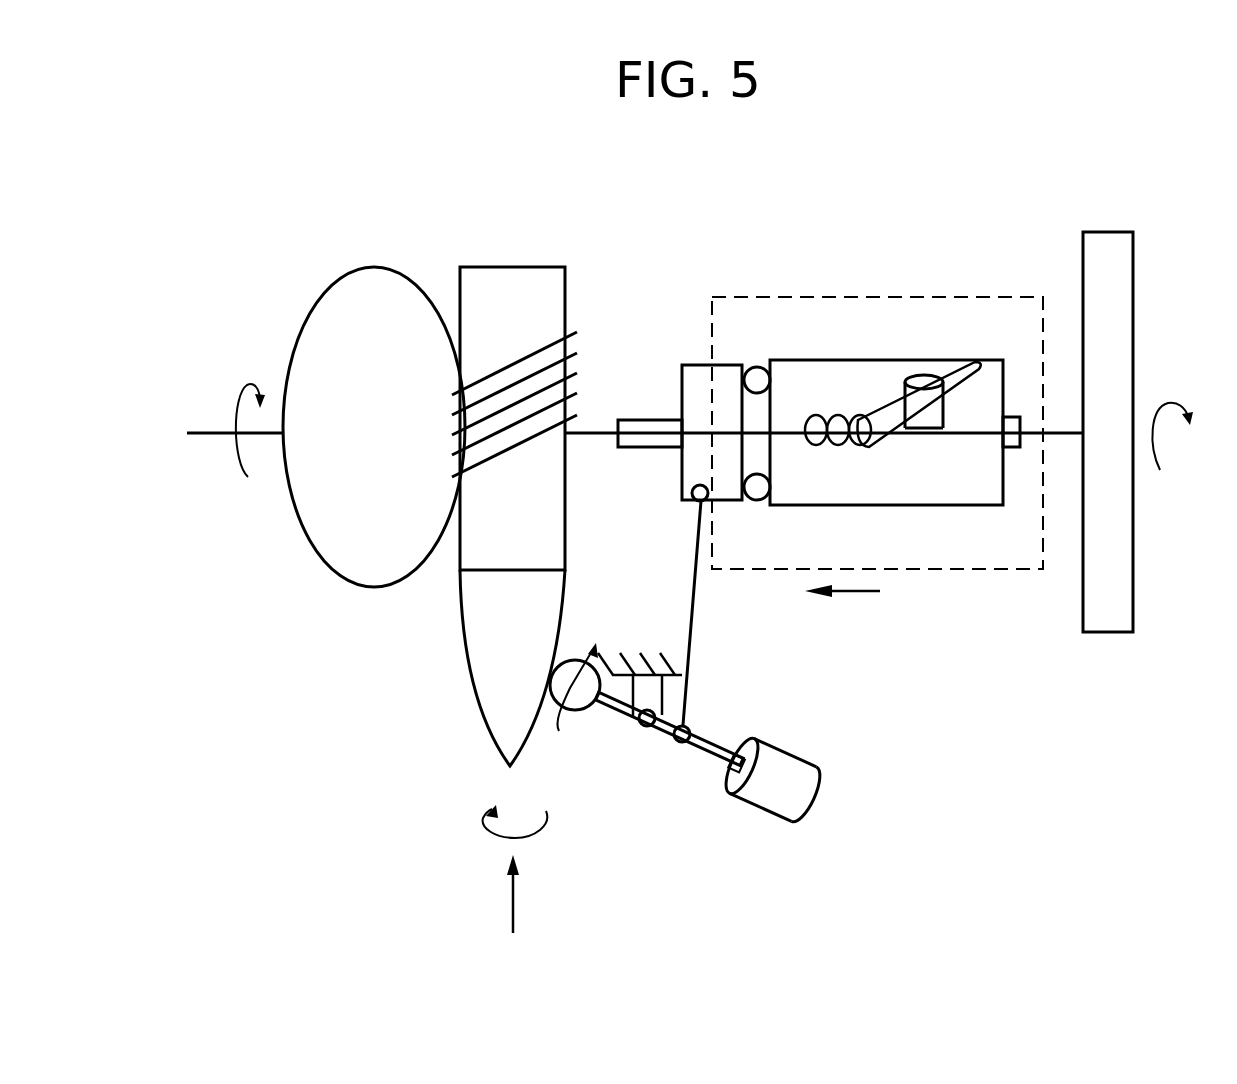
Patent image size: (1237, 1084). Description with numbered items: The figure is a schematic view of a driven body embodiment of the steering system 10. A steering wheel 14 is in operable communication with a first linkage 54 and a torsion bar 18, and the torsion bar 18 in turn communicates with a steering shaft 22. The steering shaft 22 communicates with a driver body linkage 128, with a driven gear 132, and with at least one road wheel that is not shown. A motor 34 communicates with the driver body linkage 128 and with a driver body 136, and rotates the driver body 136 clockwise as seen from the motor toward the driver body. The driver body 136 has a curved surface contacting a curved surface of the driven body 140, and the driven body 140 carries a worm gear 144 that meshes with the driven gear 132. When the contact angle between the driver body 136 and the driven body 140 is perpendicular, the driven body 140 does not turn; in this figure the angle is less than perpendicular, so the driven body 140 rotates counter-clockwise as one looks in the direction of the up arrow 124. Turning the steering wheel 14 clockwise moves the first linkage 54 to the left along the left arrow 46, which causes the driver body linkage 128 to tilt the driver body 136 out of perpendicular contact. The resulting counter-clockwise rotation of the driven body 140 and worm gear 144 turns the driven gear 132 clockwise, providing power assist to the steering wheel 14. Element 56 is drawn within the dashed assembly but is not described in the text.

The steering system 10 is at (278, 263).
The steering wheel 14 is at (1106, 239).
The torsion bar 18 is at (834, 428).
The steering shaft 22 is at (198, 436).
The motor 34 is at (773, 800).
The left arrow 46 is at (838, 592).
The first linkage 54 is at (881, 295).
The sensor 56 is at (893, 403).
The up arrow 124 is at (514, 918).
The driver body linkage 128 is at (694, 631).
The driven gear 132 is at (376, 419).
The driver body 136 is at (578, 702).
The driven body 140 is at (534, 522).
The worm gear 144 is at (573, 362).